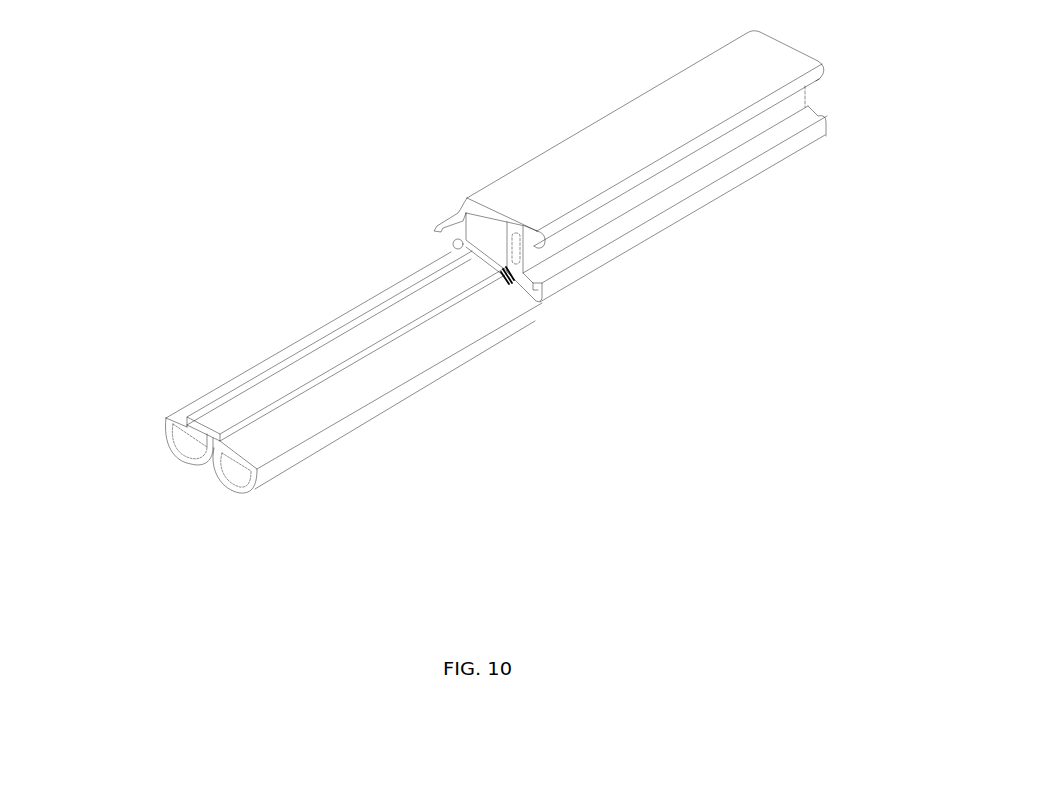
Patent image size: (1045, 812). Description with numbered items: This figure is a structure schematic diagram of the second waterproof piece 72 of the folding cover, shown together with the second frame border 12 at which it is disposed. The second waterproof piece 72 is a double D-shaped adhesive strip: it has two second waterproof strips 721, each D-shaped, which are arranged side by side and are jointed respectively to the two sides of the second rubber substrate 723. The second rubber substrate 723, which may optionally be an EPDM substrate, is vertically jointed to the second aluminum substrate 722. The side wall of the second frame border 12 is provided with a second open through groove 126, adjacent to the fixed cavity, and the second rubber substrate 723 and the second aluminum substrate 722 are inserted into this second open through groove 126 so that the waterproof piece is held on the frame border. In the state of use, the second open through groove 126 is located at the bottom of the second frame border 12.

The second frame border 12 is at (610, 205).
The second open through groove 126 is at (505, 271).
The second waterproof piece 72 is at (294, 430).
The second waterproof strip 721 is at (167, 419).
The second aluminum substrate 722 is at (315, 358).
The second rubber substrate 723 is at (205, 436).